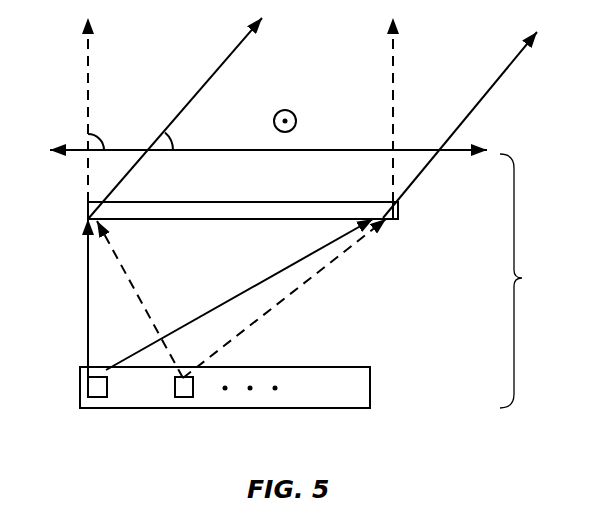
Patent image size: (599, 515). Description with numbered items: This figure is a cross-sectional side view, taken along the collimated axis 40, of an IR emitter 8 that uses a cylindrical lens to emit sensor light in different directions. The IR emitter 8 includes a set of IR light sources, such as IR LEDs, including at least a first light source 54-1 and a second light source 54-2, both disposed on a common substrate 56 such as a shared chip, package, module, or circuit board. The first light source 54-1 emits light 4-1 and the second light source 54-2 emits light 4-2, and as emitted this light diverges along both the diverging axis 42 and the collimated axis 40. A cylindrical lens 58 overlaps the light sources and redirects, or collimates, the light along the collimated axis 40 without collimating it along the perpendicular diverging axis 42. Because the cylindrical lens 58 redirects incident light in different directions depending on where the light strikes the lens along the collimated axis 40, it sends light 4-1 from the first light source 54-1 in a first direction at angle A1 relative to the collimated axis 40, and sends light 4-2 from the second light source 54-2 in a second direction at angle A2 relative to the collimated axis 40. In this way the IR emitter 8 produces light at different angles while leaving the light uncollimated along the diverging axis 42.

The light 4-1 is at (227, 62).
The light 4-2 is at (88, 60).
The angle A1 is at (167, 135).
The angle A2 is at (98, 136).
The collimated axis 40 is at (342, 152).
The diverging axis 42 is at (297, 121).
The cylindrical lens 58 is at (238, 201).
The common substrate 56 is at (370, 385).
The first light source 54-1 is at (97, 397).
The second light source 54-2 is at (183, 397).
The IR emitter 8 is at (519, 281).